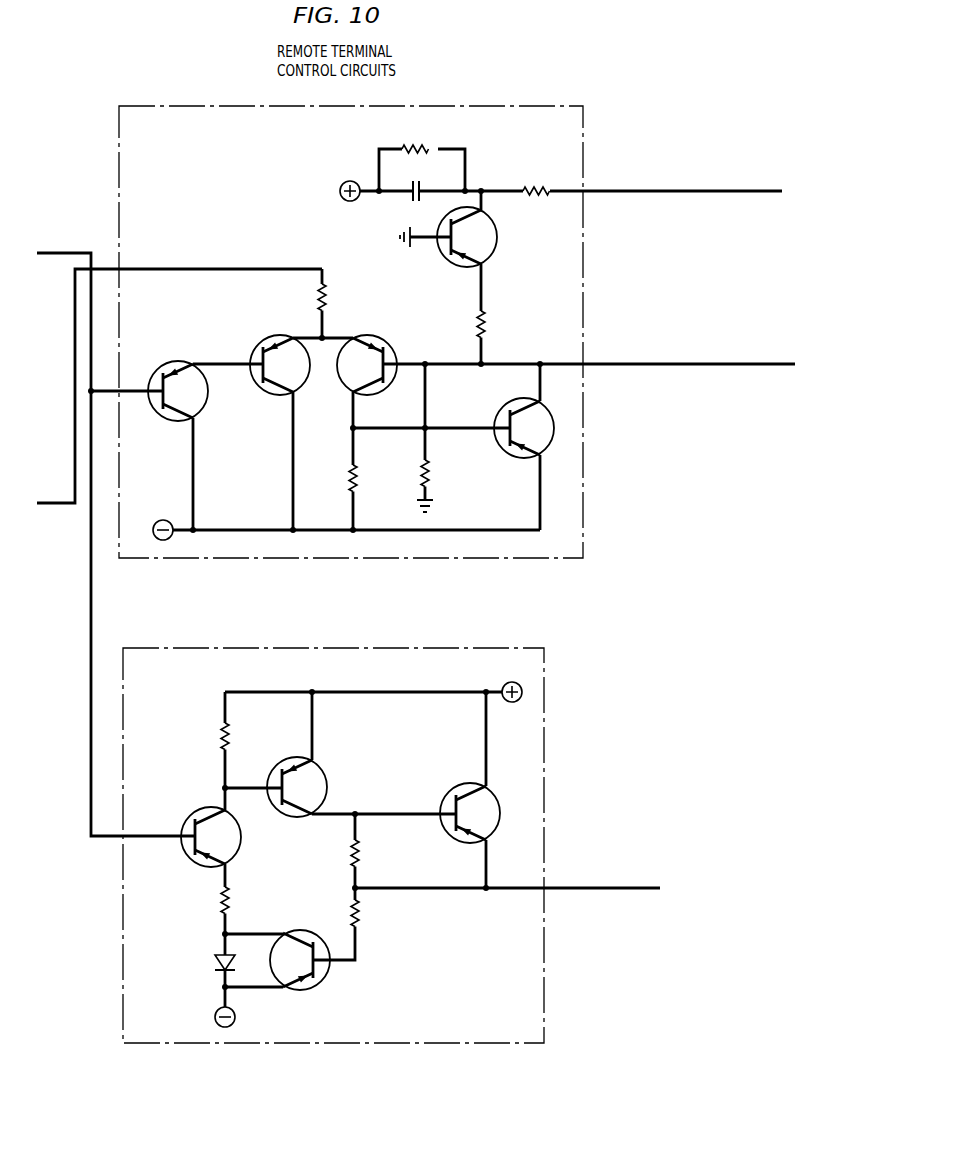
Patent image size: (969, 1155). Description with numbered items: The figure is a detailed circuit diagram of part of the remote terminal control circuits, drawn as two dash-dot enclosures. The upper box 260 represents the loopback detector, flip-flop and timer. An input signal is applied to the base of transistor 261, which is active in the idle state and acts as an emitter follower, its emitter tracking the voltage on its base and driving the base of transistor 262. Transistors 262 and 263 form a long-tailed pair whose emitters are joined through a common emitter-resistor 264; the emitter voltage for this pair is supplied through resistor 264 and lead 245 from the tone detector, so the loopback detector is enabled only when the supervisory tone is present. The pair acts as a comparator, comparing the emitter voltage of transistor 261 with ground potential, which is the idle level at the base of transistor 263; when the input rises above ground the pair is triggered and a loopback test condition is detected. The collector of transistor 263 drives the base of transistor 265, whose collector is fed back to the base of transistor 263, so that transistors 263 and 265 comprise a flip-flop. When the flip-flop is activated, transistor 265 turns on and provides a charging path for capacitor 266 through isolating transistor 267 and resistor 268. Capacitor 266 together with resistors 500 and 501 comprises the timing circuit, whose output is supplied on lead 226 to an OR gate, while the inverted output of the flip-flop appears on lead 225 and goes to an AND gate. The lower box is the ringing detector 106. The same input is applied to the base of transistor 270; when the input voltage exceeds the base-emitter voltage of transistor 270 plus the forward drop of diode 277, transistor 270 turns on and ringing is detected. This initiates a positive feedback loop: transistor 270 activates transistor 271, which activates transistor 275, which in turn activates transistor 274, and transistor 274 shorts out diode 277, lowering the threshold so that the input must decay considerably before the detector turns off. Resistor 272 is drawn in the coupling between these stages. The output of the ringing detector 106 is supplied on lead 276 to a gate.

The box 260 is at (540, 106).
The ringing detector 106 is at (512, 648).
The resistor 500 is at (422, 157).
The capacitor 266 is at (421, 180).
The resistor 501 is at (536, 179).
The isolating transistor 267 is at (498, 238).
The resistor 268 is at (497, 337).
The lead 226 is at (708, 193).
The lead 225 is at (707, 365).
The common emitter-resistor 264 is at (337, 303).
The transistor 261 is at (167, 363).
The transistor 262 is at (268, 339).
The transistor 263 is at (381, 339).
The transistor 265 is at (512, 456).
The lead 276 is at (52, 252).
The lead 245 is at (46, 504).
The transistor 270 is at (241, 843).
The transistor 271 is at (326, 775).
The resistor 272 is at (351, 887).
The transistor 275 is at (461, 784).
The transistor 274 is at (318, 985).
The diode 277 is at (213, 964).